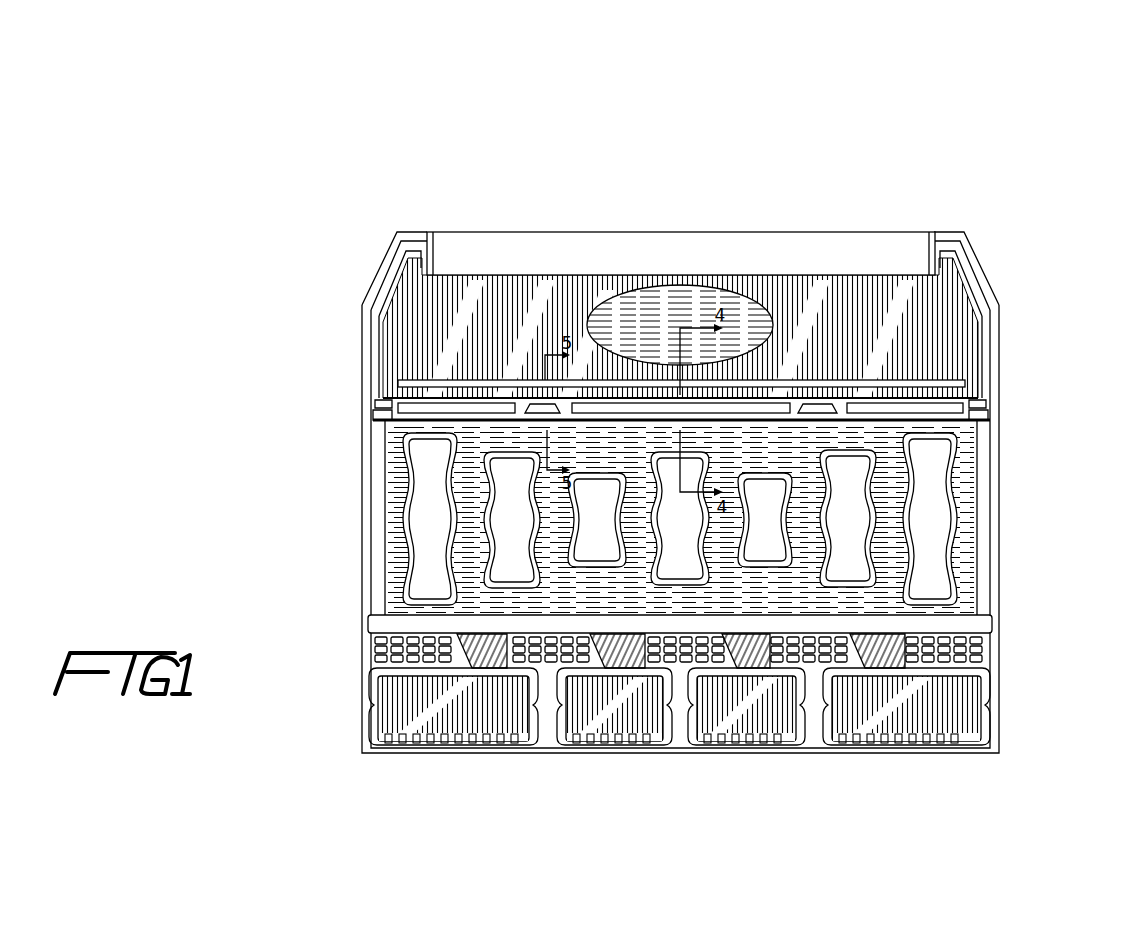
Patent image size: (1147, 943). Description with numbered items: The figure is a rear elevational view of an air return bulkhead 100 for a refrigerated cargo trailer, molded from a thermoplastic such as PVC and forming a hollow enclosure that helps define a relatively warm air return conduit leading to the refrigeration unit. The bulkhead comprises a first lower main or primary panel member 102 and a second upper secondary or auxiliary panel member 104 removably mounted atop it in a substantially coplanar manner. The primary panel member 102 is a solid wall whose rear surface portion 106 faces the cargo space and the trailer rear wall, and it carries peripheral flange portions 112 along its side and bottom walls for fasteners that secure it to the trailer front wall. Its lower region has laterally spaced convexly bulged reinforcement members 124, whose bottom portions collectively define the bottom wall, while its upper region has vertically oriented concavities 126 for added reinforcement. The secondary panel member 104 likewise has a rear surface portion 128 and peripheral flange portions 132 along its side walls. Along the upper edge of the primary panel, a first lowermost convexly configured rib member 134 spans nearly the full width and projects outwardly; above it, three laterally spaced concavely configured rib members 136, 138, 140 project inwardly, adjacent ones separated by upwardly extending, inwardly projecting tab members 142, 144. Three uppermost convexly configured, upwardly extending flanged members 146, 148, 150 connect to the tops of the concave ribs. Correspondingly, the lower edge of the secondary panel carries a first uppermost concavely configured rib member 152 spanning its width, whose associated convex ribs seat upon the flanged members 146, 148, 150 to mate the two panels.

The air return bulkhead 100 is at (915, 133).
The first lower main or primary panel member 102 is at (1000, 585).
The second upper secondary or auxiliary panel member 104 is at (1000, 305).
The rear surface portion 106 is at (563, 590).
The peripheral flange portions 112 is at (363, 500).
The convexly bulged reinforcement members 124 is at (397, 708).
The vertically oriented concavities 126 is at (510, 537).
The rear surface portion 128 is at (525, 295).
The peripheral flange portions 132 is at (370, 310).
The first lowermost convexly configured rib member 134 is at (938, 463).
The concavely configured rib member 136 is at (438, 410).
The concavely configured rib member 138 is at (642, 412).
The concavely configured rib member 140 is at (872, 413).
The tab member 142 is at (535, 410).
The tab member 144 is at (813, 410).
The convexly configured upwardly extending flanged member 146 is at (470, 403).
The convexly configured upwardly extending flanged member 148 is at (773, 403).
The convexly configured upwardly extending flanged member 150 is at (918, 407).
The first uppermost concavely configured rib member 152 is at (604, 388).